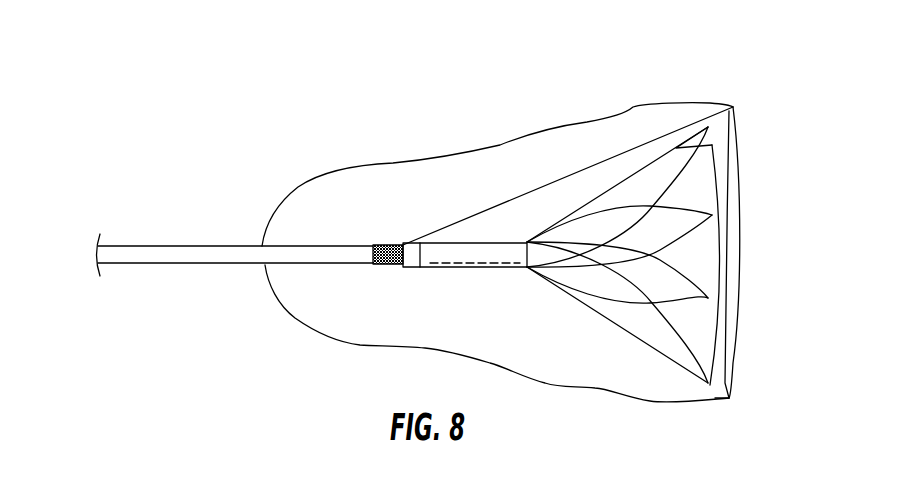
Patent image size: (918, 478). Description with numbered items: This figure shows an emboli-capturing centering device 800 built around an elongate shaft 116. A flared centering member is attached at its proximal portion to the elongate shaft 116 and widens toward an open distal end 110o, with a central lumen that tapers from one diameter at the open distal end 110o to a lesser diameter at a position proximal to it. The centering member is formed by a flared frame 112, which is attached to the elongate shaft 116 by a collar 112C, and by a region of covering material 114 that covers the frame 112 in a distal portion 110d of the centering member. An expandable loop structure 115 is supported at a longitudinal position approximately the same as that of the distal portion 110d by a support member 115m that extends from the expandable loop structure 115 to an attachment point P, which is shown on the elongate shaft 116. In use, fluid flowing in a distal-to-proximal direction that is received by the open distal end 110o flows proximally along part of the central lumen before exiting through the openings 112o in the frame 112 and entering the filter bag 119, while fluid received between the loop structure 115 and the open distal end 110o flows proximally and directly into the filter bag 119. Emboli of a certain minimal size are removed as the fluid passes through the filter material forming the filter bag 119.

The emboli-capturing centering device 800 is at (421, 77).
The elongate shaft 116 is at (210, 246).
The filter bag 119 is at (298, 187).
The attachment point P is at (397, 243).
The collar 112C is at (410, 267).
The flared frame 112 is at (646, 335).
The openings 112o is at (596, 282).
The covering material 114 is at (690, 157).
The support member 115m is at (555, 181).
The open distal end 110o is at (726, 204).
The distal portion 110d is at (723, 297).
The expandable loop structure 115 is at (739, 362).